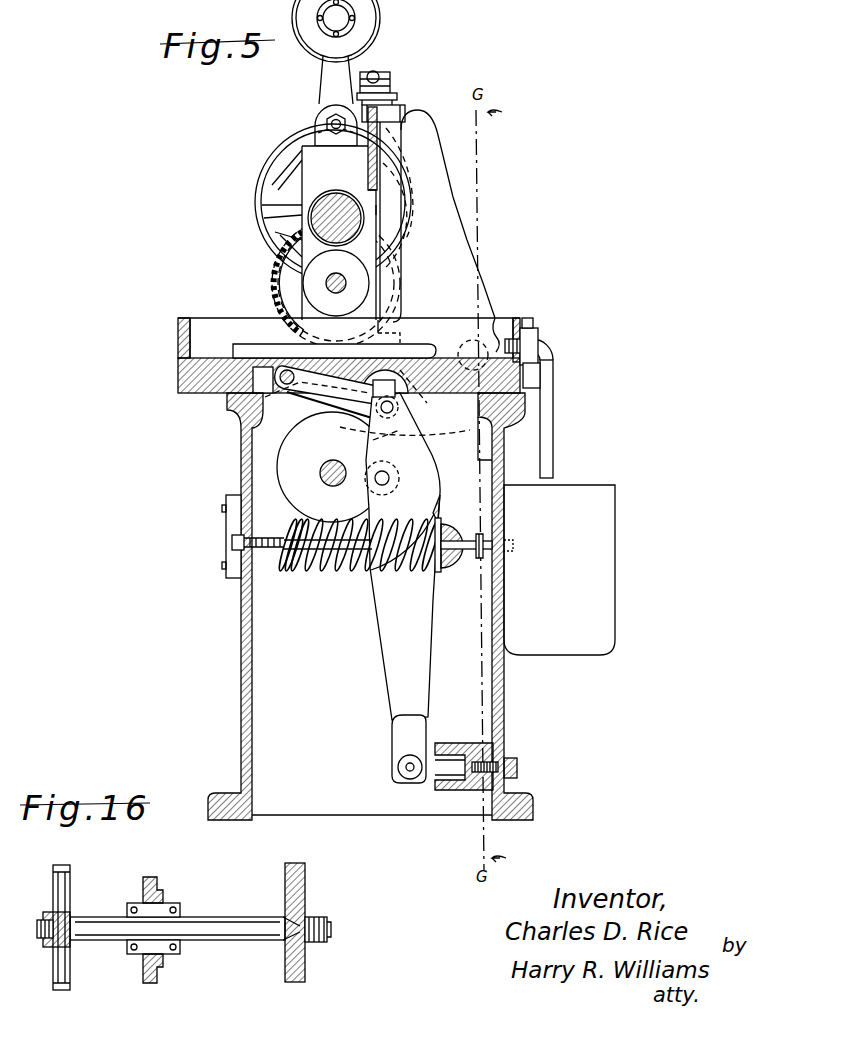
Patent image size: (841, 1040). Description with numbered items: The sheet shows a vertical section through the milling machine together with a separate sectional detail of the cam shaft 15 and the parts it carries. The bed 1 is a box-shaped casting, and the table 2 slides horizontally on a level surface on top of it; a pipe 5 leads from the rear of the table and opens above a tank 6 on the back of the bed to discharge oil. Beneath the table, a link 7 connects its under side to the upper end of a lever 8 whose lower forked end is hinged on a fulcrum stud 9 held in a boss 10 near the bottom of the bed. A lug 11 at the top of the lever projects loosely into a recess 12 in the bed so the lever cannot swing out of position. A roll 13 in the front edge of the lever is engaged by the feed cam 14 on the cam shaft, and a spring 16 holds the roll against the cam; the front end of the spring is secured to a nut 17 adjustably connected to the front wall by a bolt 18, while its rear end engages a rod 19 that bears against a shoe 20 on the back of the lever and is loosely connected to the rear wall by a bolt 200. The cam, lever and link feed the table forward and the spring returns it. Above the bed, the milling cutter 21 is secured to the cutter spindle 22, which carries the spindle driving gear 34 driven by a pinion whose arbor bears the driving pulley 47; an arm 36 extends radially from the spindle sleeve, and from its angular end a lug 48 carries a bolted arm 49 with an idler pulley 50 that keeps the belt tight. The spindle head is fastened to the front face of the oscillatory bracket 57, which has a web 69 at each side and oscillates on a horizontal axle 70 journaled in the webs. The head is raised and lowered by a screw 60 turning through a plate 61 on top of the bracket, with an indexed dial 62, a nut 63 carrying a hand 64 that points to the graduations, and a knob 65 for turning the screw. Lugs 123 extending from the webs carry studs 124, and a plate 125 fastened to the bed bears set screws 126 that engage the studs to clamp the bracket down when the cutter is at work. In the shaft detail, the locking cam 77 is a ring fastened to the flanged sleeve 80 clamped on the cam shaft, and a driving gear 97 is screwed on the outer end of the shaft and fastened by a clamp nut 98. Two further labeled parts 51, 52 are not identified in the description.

In FIG. 5, the bed 1 is at (370, 606).
In FIG. 5, the table 2 is at (349, 355).
In FIG. 5, the pipe 5 is at (553, 418).
In FIG. 5, the tank 6 is at (559, 570).
In FIG. 5, the link 7 is at (318, 404).
In FIG. 5, the lever 8 is at (405, 545).
In FIG. 5, the fulcrum stud 9 is at (450, 754).
In FIG. 5, the boss 10 is at (455, 790).
In FIG. 5, the lug 11 is at (413, 402).
In FIG. 5, the recess 12 is at (440, 393).
In FIG. 5, the roll 13 is at (400, 478).
In FIG. 5, the feed cam 14 is at (332, 467).
In FIG. 16, the feed cam 14 is at (285, 872).
In FIG. 5, the cam shaft 15 is at (325, 480).
In FIG. 16, the cam shaft 15 is at (232, 917).
In FIG. 5, the spring 16 is at (322, 572).
In FIG. 5, the nut 17 is at (283, 560).
In FIG. 5, the bolt 18 is at (270, 535).
In FIG. 5, the rod 19 is at (455, 568).
In FIG. 5, the shoe 20 is at (435, 572).
In FIG. 5, the milling cutter 21 is at (300, 288).
In FIG. 5, the cutter spindle 22 is at (346, 283).
In FIG. 5, the spindle driving gear 34 is at (272, 303).
In FIG. 5, the arm 36 is at (351, 250).
In FIG. 5, the driving pulley 47 is at (258, 189).
In FIG. 5, the lug 48 is at (318, 118).
In FIG. 5, the arm 49 is at (336, 81).
In FIG. 5, the idler pulley 50 is at (380, 15).
In FIG. 5, the shaft 51 is at (376, 211).
In FIG. 5, the bore 52 is at (330, 200).
In FIG. 5, the oscillatory bracket 57 is at (398, 183).
In FIG. 5, the screw 60 is at (377, 157).
In FIG. 5, the plate 61 is at (405, 112).
In FIG. 5, the indexed dial 62 is at (386, 98).
In FIG. 5, the nut 63 is at (390, 80).
In FIG. 5, the hand 64 is at (368, 92).
In FIG. 5, the knob 65 is at (381, 70).
In FIG. 5, the web 69 is at (448, 214).
In FIG. 5, the horizontal axle 70 is at (498, 322).
In FIG. 16, the locking cam 77 is at (148, 875).
In FIG. 16, the flanged sleeve 80 is at (168, 960).
In FIG. 16, the driving gear 97 is at (53, 879).
In FIG. 16, the clamp nut 98 is at (43, 945).
In FIG. 5, the lugs 123 is at (540, 378).
In FIG. 5, the studs 124 is at (555, 352).
In FIG. 5, the plate 125 is at (535, 336).
In FIG. 5, the set screws 126 is at (534, 318).
In FIG. 5, the bolt 200 is at (507, 558).